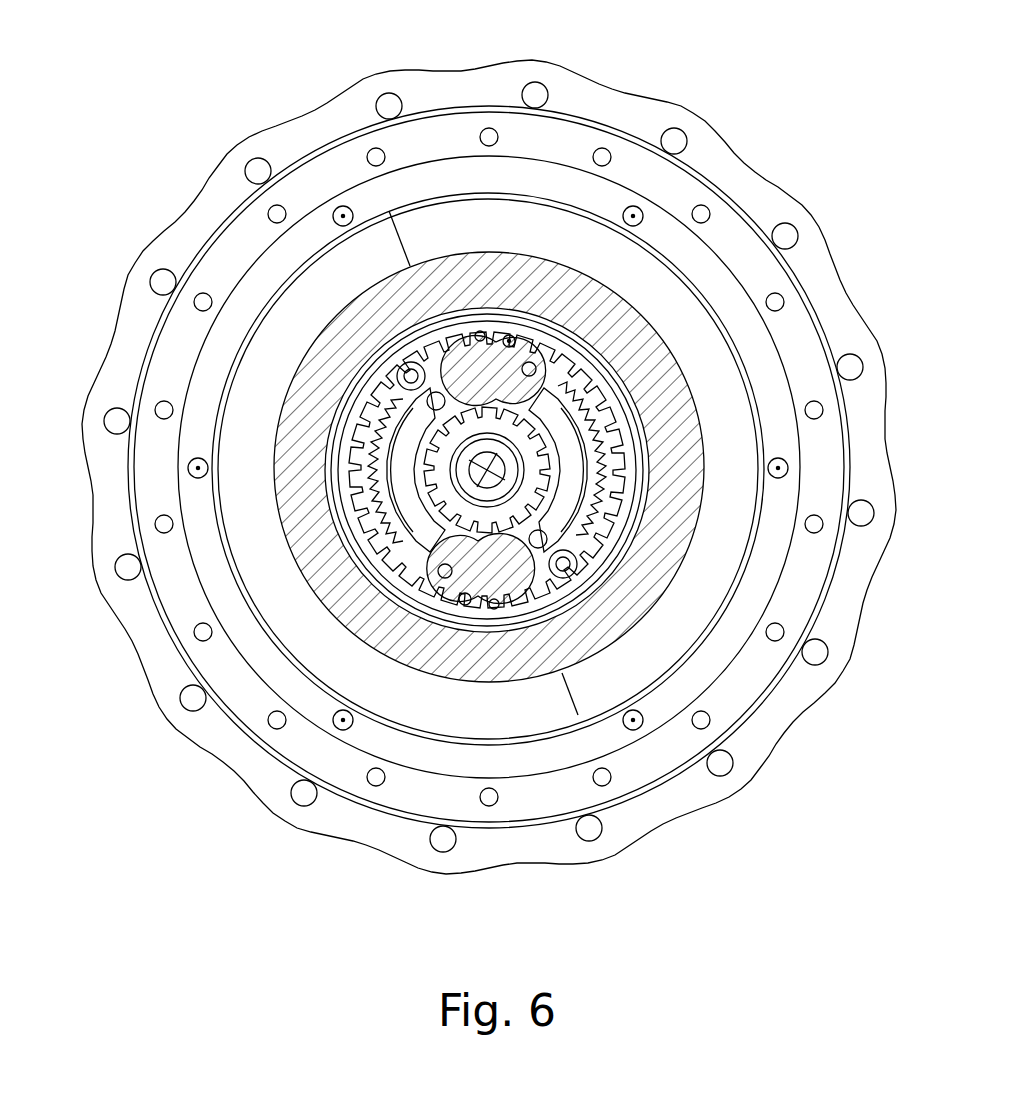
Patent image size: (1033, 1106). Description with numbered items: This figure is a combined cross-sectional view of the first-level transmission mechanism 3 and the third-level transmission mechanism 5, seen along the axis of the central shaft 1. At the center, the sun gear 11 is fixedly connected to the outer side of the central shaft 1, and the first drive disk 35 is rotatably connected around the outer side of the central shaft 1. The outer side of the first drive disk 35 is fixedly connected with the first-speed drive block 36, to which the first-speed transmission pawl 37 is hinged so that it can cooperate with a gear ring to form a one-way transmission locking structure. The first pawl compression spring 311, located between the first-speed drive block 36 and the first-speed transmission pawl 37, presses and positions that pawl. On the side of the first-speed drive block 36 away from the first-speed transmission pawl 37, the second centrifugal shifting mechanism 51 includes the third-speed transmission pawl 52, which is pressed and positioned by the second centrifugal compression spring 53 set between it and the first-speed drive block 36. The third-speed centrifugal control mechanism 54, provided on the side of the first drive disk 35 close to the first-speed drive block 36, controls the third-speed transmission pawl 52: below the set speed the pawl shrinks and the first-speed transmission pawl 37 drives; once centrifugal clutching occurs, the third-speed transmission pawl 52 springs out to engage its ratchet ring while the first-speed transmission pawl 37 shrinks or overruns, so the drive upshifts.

The central shaft 1 is at (733, 526).
The first-level transmission mechanism 3 is at (593, 467).
The third-level transmission mechanism 5 is at (461, 467).
The sun gear 11 is at (686, 461).
The first drive disk 35 is at (283, 593).
The first-speed drive block 36 is at (488, 572).
The first-speed transmission pawl 37 is at (389, 229).
The second centrifugal shifting mechanism 51 is at (333, 446).
The third-speed transmission pawl 52 is at (649, 659).
The second centrifugal compression spring 53 is at (445, 170).
The third-speed centrifugal control mechanism 54 is at (659, 462).
The first pawl compression spring 311 is at (590, 177).